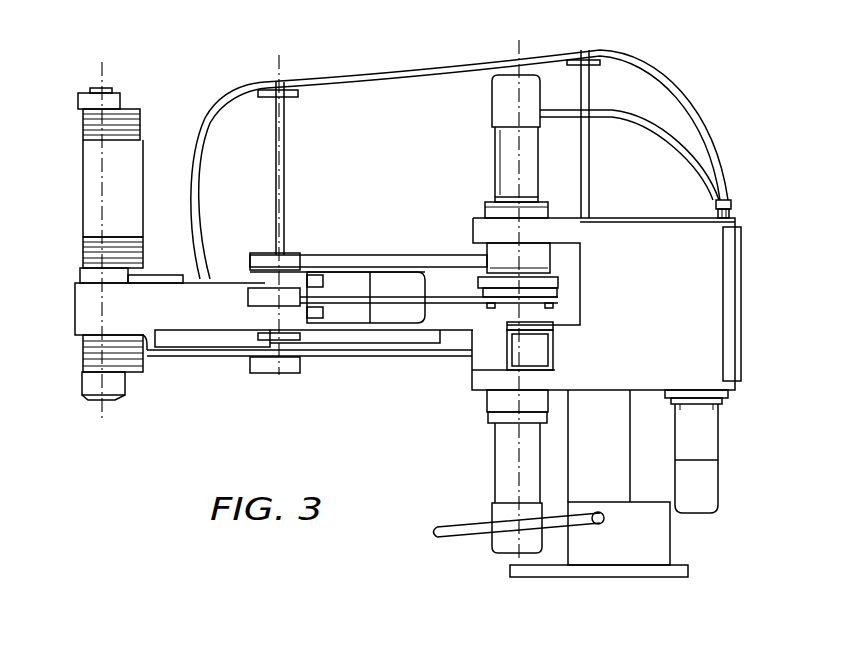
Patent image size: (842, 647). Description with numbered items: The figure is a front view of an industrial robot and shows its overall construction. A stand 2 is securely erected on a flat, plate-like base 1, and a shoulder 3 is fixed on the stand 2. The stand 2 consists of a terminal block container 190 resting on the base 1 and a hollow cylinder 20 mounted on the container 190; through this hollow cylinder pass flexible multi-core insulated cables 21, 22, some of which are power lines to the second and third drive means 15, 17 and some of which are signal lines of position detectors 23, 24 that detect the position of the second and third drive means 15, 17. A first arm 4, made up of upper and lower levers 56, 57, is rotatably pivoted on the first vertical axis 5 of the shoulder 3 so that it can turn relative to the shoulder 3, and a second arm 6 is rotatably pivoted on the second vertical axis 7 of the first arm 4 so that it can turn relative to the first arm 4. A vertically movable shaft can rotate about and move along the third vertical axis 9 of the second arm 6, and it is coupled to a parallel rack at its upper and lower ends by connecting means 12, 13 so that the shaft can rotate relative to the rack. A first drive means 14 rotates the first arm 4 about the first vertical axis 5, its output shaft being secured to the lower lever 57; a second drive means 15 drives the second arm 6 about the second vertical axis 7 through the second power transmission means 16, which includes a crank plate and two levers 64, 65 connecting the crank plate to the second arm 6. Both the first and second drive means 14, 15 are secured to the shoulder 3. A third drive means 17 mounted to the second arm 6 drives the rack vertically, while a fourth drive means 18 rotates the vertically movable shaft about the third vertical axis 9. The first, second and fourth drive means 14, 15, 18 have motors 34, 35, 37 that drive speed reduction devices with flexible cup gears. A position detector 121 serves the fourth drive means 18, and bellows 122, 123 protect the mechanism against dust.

The base 1 is at (657, 572).
The stand 2 is at (618, 462).
The shoulder 3 is at (712, 325).
The first arm 4 is at (395, 262).
The first vertical axis 5 is at (523, 42).
The second arm 6 is at (82, 305).
The second vertical axis 7 is at (280, 67).
The third vertical axis 9 is at (104, 78).
The connecting means 12 is at (127, 97).
The connecting means 13 is at (118, 388).
The first drive means 14 is at (500, 462).
The second drive means 15 is at (497, 147).
The second power transmission means 16 is at (470, 303).
The third drive means 17 is at (342, 282).
The fourth drive means 18 is at (708, 438).
The hollow cylinder 20 is at (613, 430).
The flexible multi-core insulated cable 21 is at (612, 110).
The flexible multi-core insulated cable 22 is at (680, 73).
The position detector 23 is at (498, 98).
The position detector 24 is at (425, 283).
The motor 34 is at (500, 483).
The motor 35 is at (533, 158).
The motor 37 is at (717, 453).
The upper lever 56 is at (438, 262).
The lower lever 57 is at (405, 362).
The lever 64 is at (503, 300).
The lever 65 is at (383, 302).
The position detector 121 is at (713, 495).
The bellows 122 is at (82, 182).
The bellows 123 is at (82, 355).
The terminal block container 190 is at (663, 542).